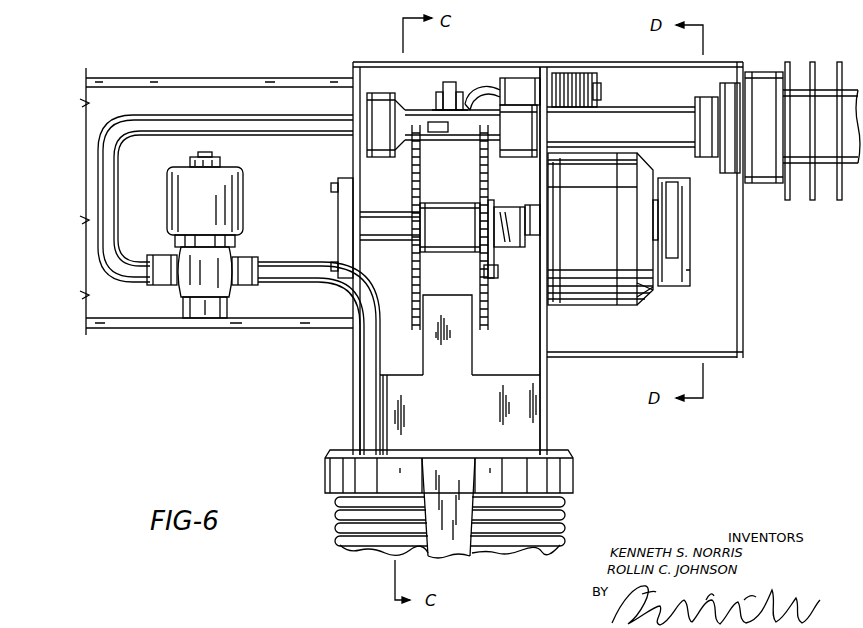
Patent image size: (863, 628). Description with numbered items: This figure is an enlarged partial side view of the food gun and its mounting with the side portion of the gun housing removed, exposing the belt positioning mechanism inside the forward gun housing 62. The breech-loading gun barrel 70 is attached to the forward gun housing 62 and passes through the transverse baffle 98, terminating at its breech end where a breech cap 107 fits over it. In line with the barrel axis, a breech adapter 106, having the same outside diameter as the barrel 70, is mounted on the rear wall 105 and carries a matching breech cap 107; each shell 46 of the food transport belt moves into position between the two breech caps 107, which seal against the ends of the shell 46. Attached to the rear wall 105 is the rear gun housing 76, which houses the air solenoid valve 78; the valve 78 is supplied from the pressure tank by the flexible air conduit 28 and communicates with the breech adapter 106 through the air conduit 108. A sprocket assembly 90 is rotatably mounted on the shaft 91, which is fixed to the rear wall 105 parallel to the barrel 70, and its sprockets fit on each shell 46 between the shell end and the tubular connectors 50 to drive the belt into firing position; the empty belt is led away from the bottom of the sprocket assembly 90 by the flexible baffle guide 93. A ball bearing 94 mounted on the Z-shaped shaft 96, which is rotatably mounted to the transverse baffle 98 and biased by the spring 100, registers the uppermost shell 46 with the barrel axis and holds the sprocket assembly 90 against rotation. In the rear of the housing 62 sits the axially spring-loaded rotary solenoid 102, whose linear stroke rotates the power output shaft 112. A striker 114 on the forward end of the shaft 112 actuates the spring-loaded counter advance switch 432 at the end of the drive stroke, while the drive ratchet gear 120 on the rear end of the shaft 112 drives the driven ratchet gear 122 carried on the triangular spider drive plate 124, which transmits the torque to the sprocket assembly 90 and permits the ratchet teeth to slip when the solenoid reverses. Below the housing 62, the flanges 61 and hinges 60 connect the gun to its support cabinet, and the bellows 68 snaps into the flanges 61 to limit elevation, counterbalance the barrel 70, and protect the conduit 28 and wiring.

The flexible air conduit 28 is at (368, 390).
The shell 46 is at (452, 130).
The tubular connector 50 is at (437, 123).
The hinge 60 is at (453, 560).
The flange 61 is at (573, 473).
The forward gun housing 62 is at (633, 65).
The bellows 68 is at (333, 522).
The gun barrel 70 is at (667, 113).
The rear gun housing 76 is at (158, 323).
The air solenoid valve 78 is at (233, 202).
The sprocket assembly 90 is at (413, 315).
The shaft 91 is at (370, 217).
The flexible baffle guide 93 is at (398, 415).
The ball bearing 94 is at (450, 83).
The Z-shaped shaft 96 is at (470, 97).
The transverse baffle 98 is at (545, 333).
The spring 100 is at (560, 73).
The rotary solenoid 102 is at (600, 292).
The rear wall 105 is at (358, 97).
The breech adapter 106 is at (365, 93).
The breech cap 107 is at (388, 102).
The air conduit 108 is at (133, 122).
The power output shaft 112 is at (531, 213).
The striker 114 is at (670, 210).
The drive ratchet gear 120 is at (518, 250).
The driven ratchet gear 122 is at (505, 215).
The spider drive plate 124 is at (494, 278).
The counter advance switch 432 is at (682, 275).